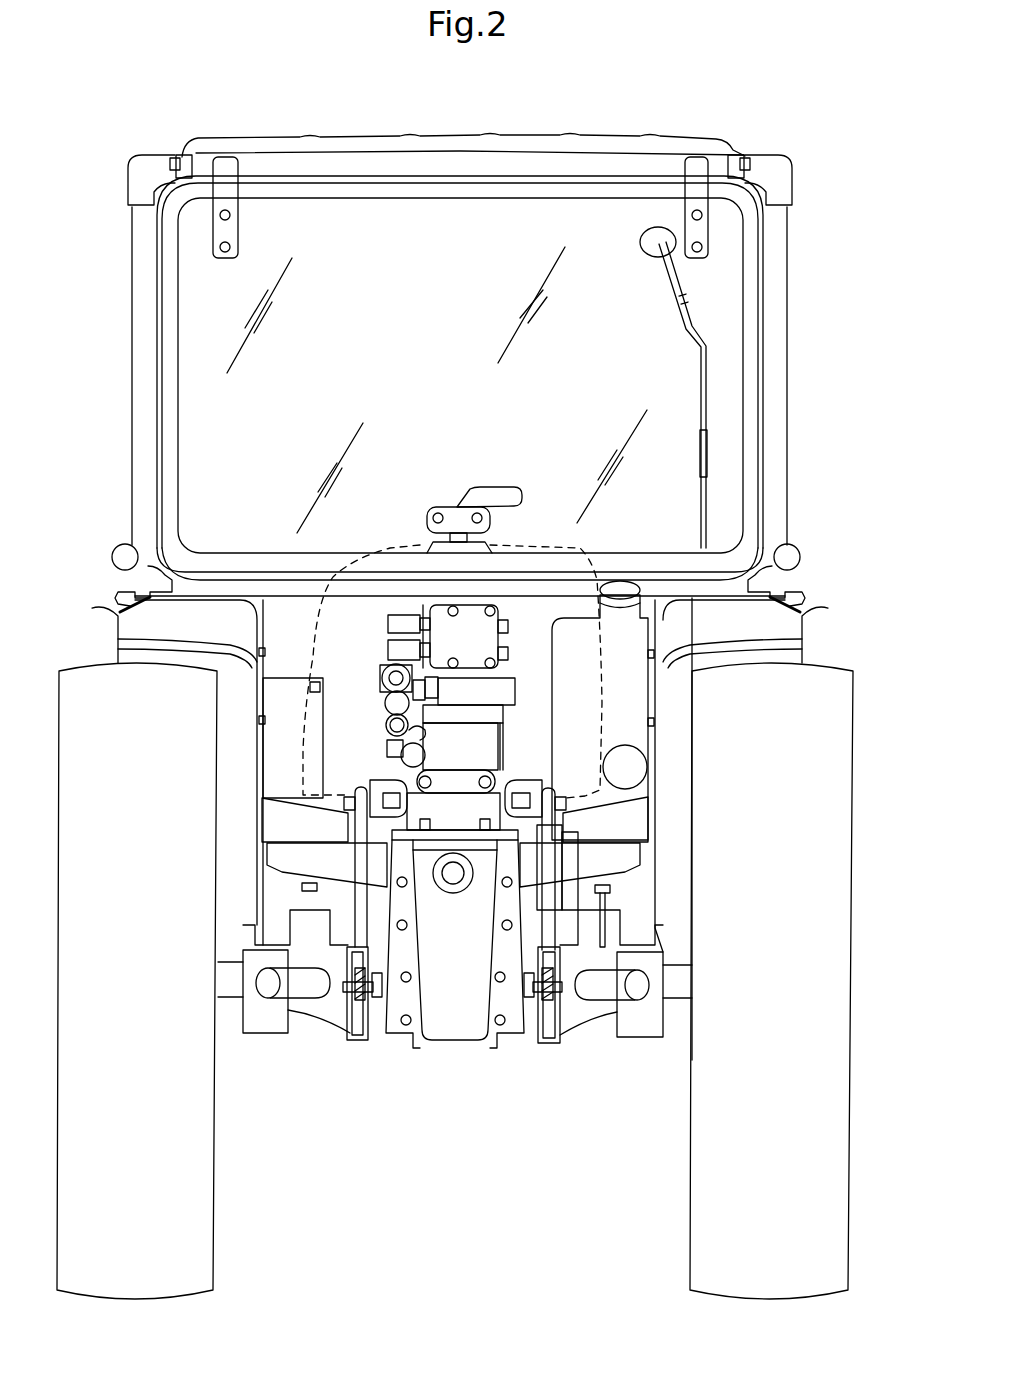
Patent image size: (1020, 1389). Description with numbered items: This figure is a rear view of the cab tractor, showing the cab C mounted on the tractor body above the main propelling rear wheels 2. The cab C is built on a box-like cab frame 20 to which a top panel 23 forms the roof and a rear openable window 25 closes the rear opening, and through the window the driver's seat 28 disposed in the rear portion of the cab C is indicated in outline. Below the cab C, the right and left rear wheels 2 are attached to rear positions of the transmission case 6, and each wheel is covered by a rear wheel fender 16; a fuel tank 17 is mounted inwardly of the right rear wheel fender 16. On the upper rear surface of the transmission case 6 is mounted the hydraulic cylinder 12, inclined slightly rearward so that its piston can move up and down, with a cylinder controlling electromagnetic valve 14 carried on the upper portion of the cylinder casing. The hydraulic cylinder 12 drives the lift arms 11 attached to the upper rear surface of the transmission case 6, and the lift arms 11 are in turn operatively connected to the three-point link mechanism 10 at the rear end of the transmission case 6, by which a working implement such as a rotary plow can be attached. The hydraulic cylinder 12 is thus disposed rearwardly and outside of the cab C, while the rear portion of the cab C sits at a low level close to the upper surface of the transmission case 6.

The cab C is at (363, 116).
The rear wheels 2 is at (214, 1150).
The transmission case 6 is at (450, 1042).
The three-point link mechanism 10 is at (352, 998).
The lift arms 11 is at (393, 783).
The hydraulic cylinder 12 is at (435, 735).
The cylinder controlling electromagnetic valve 14 is at (500, 637).
The rear wheel fenders 16 is at (150, 612).
The fuel tank 17 is at (640, 687).
The cab frame 20 is at (792, 258).
The top panel 23 is at (540, 133).
The rear openable window 25 is at (190, 332).
The driver's seat 28 is at (420, 545).